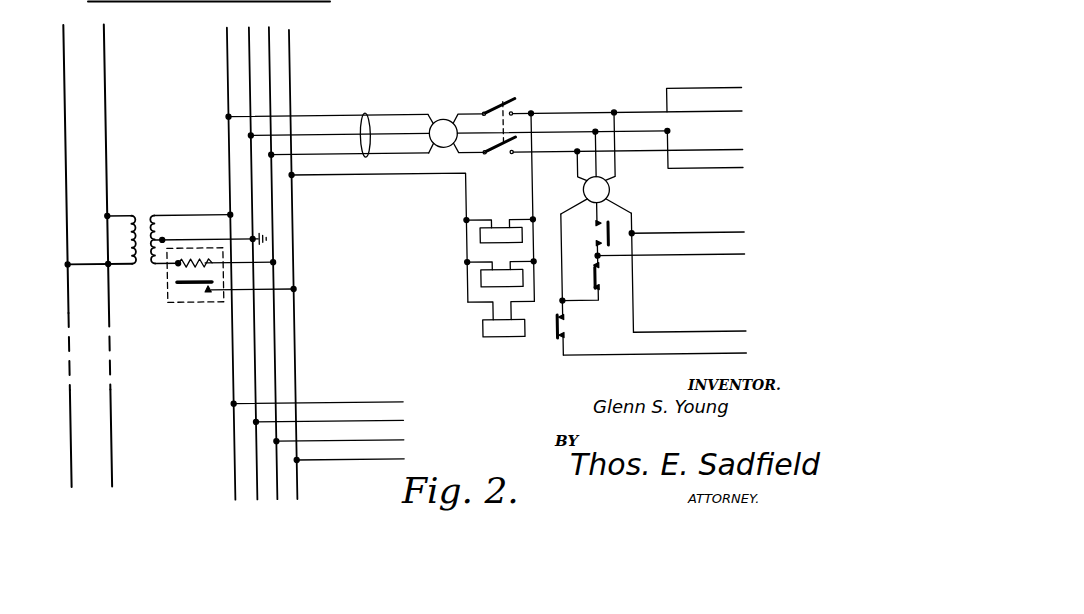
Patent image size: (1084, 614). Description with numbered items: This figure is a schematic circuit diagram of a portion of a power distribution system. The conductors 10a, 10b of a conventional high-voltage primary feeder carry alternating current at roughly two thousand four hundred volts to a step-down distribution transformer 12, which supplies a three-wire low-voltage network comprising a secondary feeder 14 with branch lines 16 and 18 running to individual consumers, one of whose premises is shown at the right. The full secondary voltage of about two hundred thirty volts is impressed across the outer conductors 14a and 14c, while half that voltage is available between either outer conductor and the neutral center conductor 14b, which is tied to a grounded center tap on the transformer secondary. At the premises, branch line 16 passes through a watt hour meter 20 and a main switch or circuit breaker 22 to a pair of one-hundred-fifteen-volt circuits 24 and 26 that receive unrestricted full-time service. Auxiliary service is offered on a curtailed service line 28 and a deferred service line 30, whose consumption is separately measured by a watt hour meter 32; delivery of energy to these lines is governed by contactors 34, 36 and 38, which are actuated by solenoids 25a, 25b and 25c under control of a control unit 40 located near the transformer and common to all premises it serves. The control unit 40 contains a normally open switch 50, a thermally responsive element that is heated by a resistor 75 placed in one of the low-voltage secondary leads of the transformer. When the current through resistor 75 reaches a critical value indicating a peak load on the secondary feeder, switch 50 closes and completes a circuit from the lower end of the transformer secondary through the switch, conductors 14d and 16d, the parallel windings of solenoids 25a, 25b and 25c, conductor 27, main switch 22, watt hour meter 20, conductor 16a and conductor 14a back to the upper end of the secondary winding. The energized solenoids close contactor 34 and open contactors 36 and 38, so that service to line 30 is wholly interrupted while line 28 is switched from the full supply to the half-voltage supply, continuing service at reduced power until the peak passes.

The conductor 10a is at (66, 473).
The conductor 10b is at (107, 473).
The step-down distribution transformer 12 is at (143, 213).
The secondary feeder 14 is at (264, 276).
The outer conductor 14a is at (226, 38).
The neutral center conductor 14b is at (249, 58).
The outer conductor 14c is at (269, 76).
The conductor 14d is at (291, 340).
The branch line 16 is at (346, 194).
The conductor 16a is at (322, 115).
The conductor 16d is at (330, 176).
The branch line 18 is at (402, 393).
The watt hour meter 20 is at (443, 120).
The main switch or circuit breaker 22 is at (503, 100).
The 115 v. circuit 24 is at (750, 92).
The solenoid 25a is at (500, 235).
The solenoid 25b is at (498, 278).
The solenoid 25c is at (497, 330).
The 115 v. circuit 26 is at (750, 148).
The conductor 27 is at (531, 185).
The curtailed service line 28 is at (754, 237).
The deferred service line 30 is at (754, 330).
The watt hour meter 32 is at (600, 196).
The contactor 34 is at (606, 231).
The contactor 36 is at (590, 278).
The contactor 38 is at (555, 341).
The control unit 40 is at (214, 277).
The normally open switch 50 is at (203, 291).
The resistor 75 is at (199, 248).